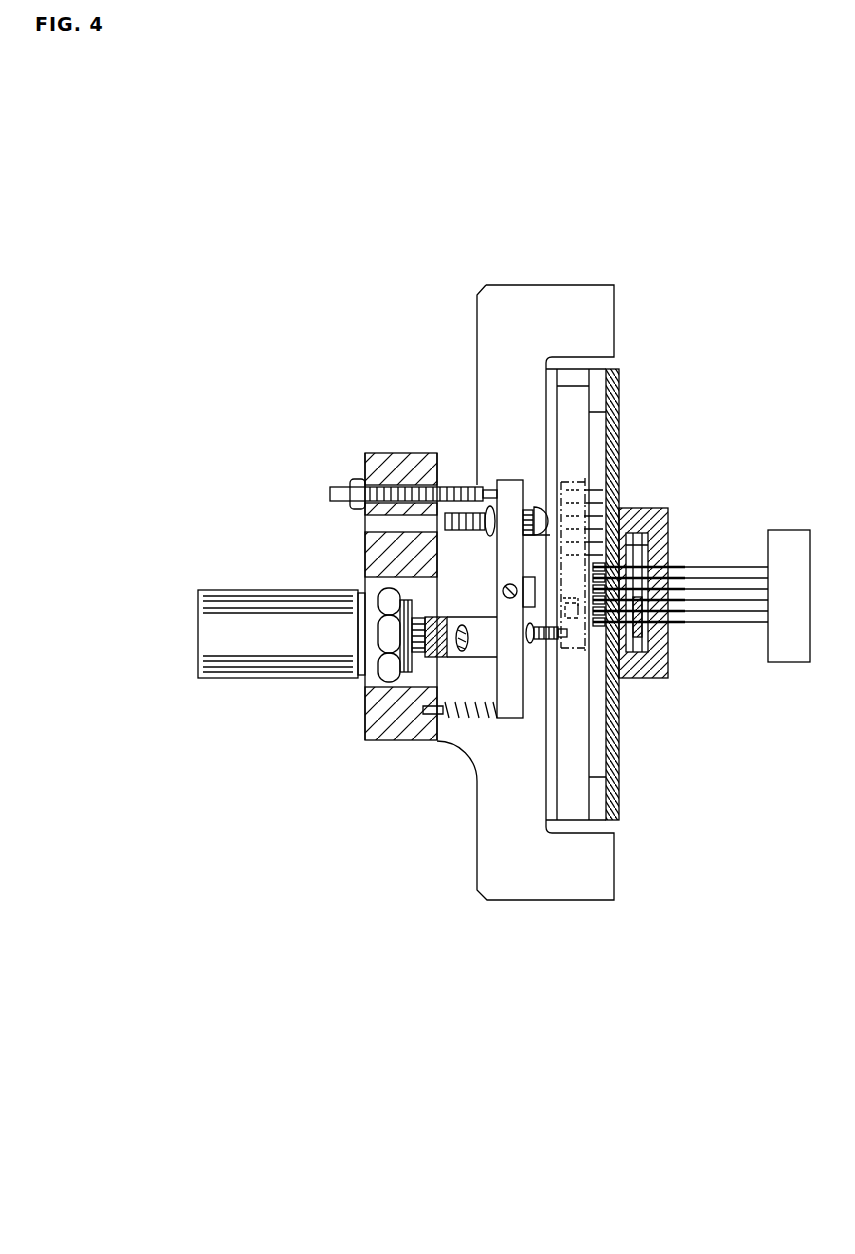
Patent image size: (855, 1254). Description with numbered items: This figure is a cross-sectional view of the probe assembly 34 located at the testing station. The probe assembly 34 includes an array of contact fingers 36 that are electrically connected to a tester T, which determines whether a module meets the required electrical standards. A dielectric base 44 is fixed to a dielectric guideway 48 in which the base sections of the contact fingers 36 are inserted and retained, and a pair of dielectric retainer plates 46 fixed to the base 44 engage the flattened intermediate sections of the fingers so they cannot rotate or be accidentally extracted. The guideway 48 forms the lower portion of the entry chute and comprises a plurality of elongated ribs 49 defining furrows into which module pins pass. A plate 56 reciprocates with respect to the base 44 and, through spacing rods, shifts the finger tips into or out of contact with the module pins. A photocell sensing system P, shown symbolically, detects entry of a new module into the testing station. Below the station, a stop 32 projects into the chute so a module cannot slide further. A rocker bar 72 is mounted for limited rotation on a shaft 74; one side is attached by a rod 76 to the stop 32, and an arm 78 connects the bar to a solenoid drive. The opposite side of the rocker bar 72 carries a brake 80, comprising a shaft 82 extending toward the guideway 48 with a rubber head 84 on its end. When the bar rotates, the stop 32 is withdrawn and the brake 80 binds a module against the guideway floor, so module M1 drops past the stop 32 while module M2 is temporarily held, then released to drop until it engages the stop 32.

The probe assembly 34 is at (333, 801).
The stop 32 is at (560, 640).
The contact fingers 36 is at (676, 567).
The dielectric base 44 is at (668, 533).
The dielectric retainer plates 46 is at (670, 650).
The guideway 48 is at (617, 405).
The ribs 49 is at (597, 763).
The plate 56 is at (640, 640).
The rocker bar 72 is at (499, 560).
The shaft 74 is at (503, 592).
The rod 76 is at (537, 650).
The arm 78 is at (497, 610).
The brake 80 is at (457, 484).
The shaft 82 is at (551, 512).
The rubber head 84 is at (533, 506).
The photocell sensing system P is at (563, 600).
The module M1 is at (572, 627).
The module M2 is at (575, 488).
The tester T is at (776, 532).